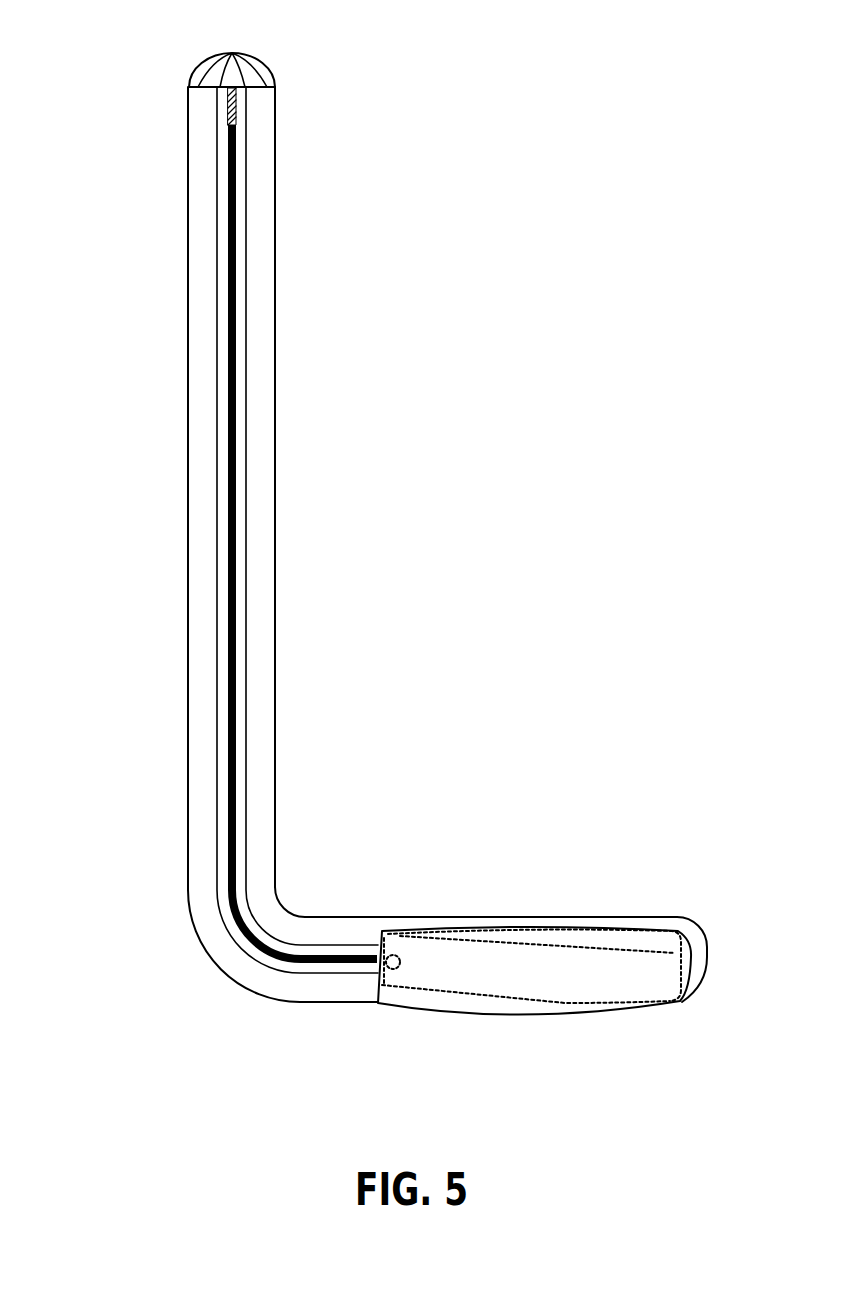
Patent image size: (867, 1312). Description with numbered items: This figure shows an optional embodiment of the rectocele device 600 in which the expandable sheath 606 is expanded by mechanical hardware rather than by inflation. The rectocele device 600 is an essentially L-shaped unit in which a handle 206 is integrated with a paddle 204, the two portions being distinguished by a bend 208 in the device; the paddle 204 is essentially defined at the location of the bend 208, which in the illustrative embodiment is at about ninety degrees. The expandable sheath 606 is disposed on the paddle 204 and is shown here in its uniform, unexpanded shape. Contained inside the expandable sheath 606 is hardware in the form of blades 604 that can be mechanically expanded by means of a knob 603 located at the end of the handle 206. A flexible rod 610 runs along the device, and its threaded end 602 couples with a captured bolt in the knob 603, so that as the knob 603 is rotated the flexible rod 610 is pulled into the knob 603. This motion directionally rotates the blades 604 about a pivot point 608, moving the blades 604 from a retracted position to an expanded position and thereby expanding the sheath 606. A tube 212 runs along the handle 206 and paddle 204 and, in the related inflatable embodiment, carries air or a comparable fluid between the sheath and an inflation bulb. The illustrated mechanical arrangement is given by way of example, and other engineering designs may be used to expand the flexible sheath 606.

The rectocele device 600 is at (411, 552).
The paddle 204 is at (362, 1003).
The handle 206 is at (188, 627).
The bend 208 is at (298, 900).
The tube 212 is at (247, 378).
The threaded end 602 is at (222, 110).
The knob 603 is at (257, 65).
The blades 604 is at (568, 1003).
The expandable sheath 606 is at (690, 957).
The pivot point 608 is at (393, 955).
The flexible rod 610 is at (228, 338).